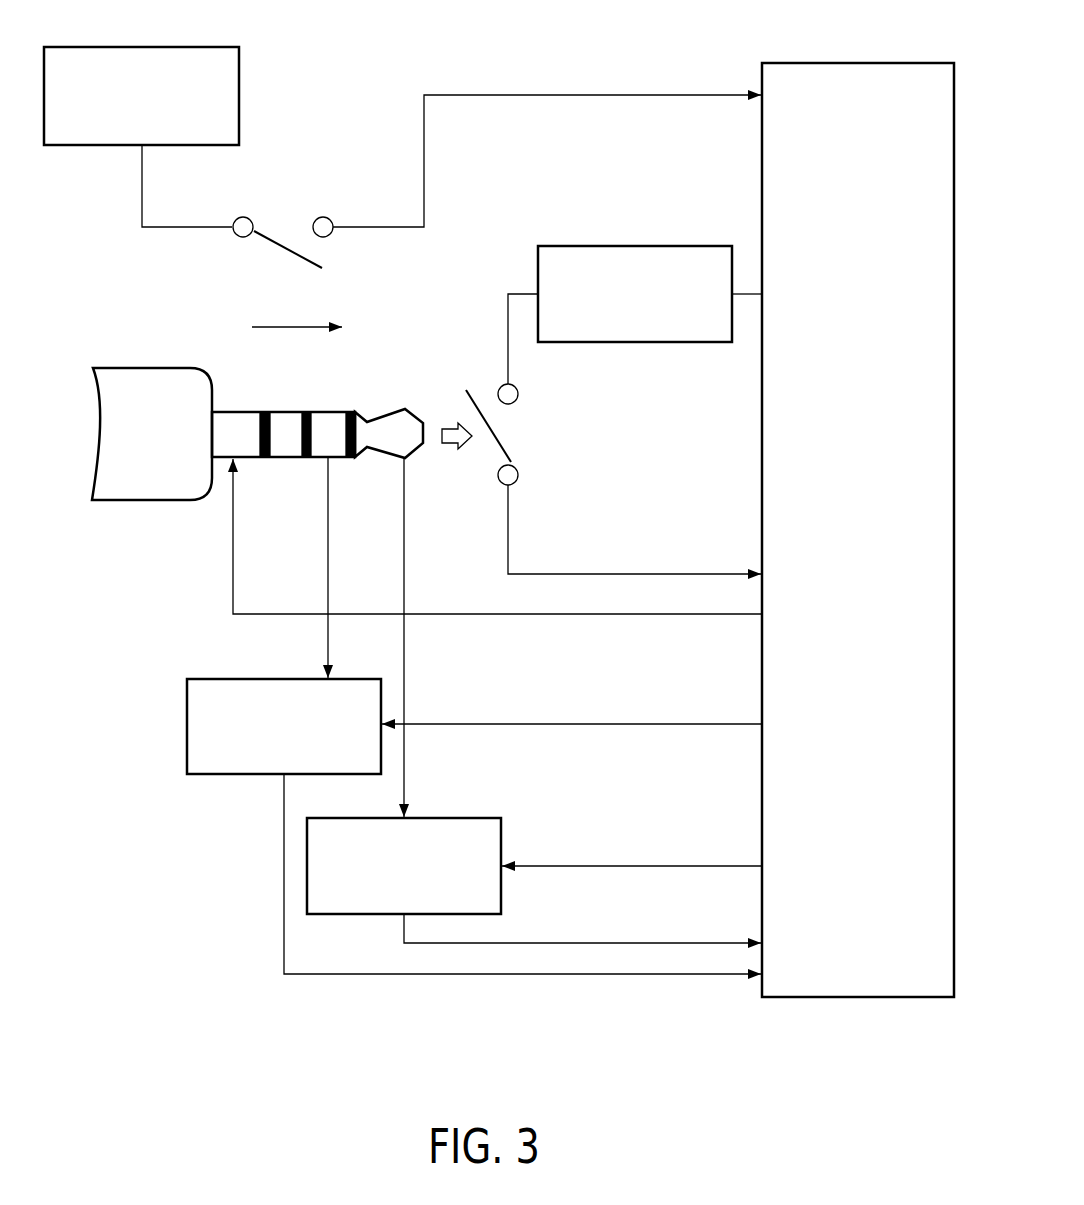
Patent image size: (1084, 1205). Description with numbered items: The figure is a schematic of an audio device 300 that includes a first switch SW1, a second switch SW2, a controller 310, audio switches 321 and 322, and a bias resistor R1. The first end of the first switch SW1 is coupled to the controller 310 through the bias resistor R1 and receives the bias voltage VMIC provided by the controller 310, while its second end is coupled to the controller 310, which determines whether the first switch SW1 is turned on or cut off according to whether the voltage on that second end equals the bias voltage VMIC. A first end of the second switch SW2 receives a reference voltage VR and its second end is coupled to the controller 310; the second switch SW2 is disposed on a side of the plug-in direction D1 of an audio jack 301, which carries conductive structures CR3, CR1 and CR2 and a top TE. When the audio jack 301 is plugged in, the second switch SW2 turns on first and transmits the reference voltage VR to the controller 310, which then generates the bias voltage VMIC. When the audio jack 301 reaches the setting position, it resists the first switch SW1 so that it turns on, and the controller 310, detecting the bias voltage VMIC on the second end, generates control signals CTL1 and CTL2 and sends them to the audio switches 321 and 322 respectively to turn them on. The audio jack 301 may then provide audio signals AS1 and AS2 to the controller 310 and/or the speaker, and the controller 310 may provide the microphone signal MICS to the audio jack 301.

The reference voltage VR is at (182, 47).
The second switch SW2 is at (287, 219).
The plug-in direction D1 is at (278, 327).
The audio jack 301 is at (148, 512).
The conductive structure CR3 is at (241, 422).
The conductive structure CR1 is at (329, 422).
The conductive structure CR2 is at (397, 422).
The top of the audio jack TE is at (433, 443).
The microphone signal MICS is at (497, 556).
The audio signal AS1 is at (354, 567).
The audio signal AS2 is at (430, 637).
The bias resistor R1 is at (675, 246).
The bias voltage VMIC is at (783, 293).
The first switch SW1 is at (518, 435).
The controller 310 is at (897, 63).
The audio switch 321 is at (245, 679).
The control signal CTL1 is at (572, 743).
The audio switch 322 is at (445, 818).
The control signal CTL2 is at (632, 883).
The audio device 300 is at (234, 1039).